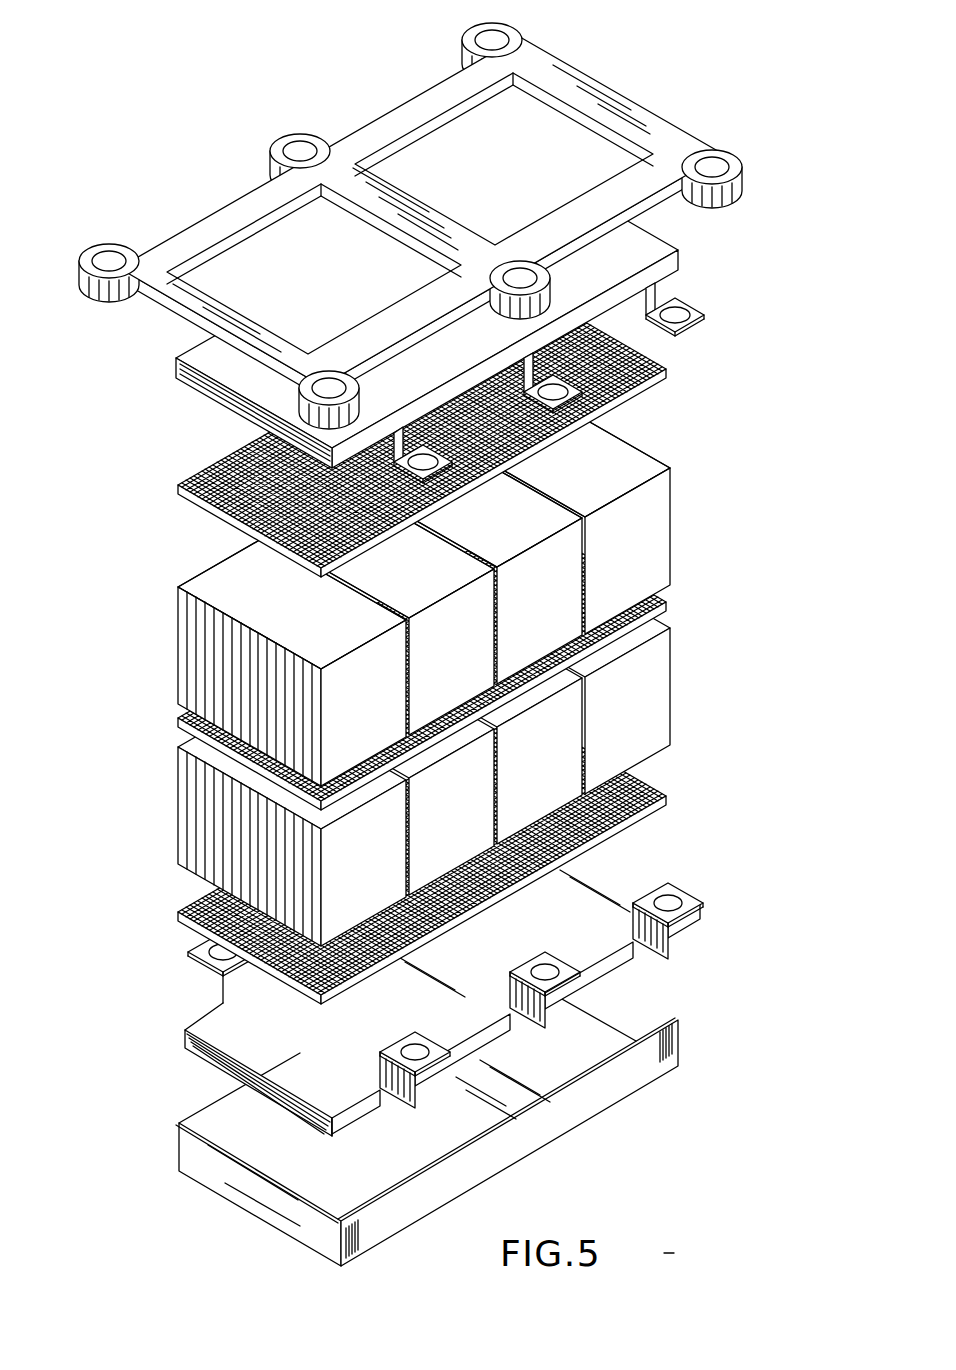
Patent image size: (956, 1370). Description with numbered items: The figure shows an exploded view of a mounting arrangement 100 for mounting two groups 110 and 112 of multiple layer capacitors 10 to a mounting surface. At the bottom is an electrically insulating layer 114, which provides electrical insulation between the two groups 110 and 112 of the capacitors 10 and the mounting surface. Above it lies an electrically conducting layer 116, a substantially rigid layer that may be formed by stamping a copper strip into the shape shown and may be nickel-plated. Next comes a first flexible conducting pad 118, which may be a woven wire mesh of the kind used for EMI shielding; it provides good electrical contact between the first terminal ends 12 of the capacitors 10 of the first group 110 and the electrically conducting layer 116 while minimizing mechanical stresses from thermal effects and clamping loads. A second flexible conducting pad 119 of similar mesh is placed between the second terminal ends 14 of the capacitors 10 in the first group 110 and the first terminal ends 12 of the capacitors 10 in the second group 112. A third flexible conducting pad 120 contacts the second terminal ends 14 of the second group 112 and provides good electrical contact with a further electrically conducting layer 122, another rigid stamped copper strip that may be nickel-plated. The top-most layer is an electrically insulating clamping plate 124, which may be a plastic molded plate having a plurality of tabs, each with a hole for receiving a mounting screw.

The mounting arrangement 100 is at (412, 644).
The electrically insulating clamping plate 124 is at (653, 130).
The electrically conducting layer 122 is at (668, 232).
The third flexible conducting pad 120 is at (666, 352).
The second terminal ends 14 is at (613, 447).
The capacitors 10 is at (419, 666).
The first terminal ends 12 is at (417, 664).
The second flexible conducting pad 119 is at (176, 742).
The second group 112 is at (436, 431).
The first flexible conducting pad 118 is at (626, 826).
The first group 110 is at (394, 858).
The electrically conducting layer 116 is at (630, 952).
The electrically insulating layer 114 is at (606, 1099).